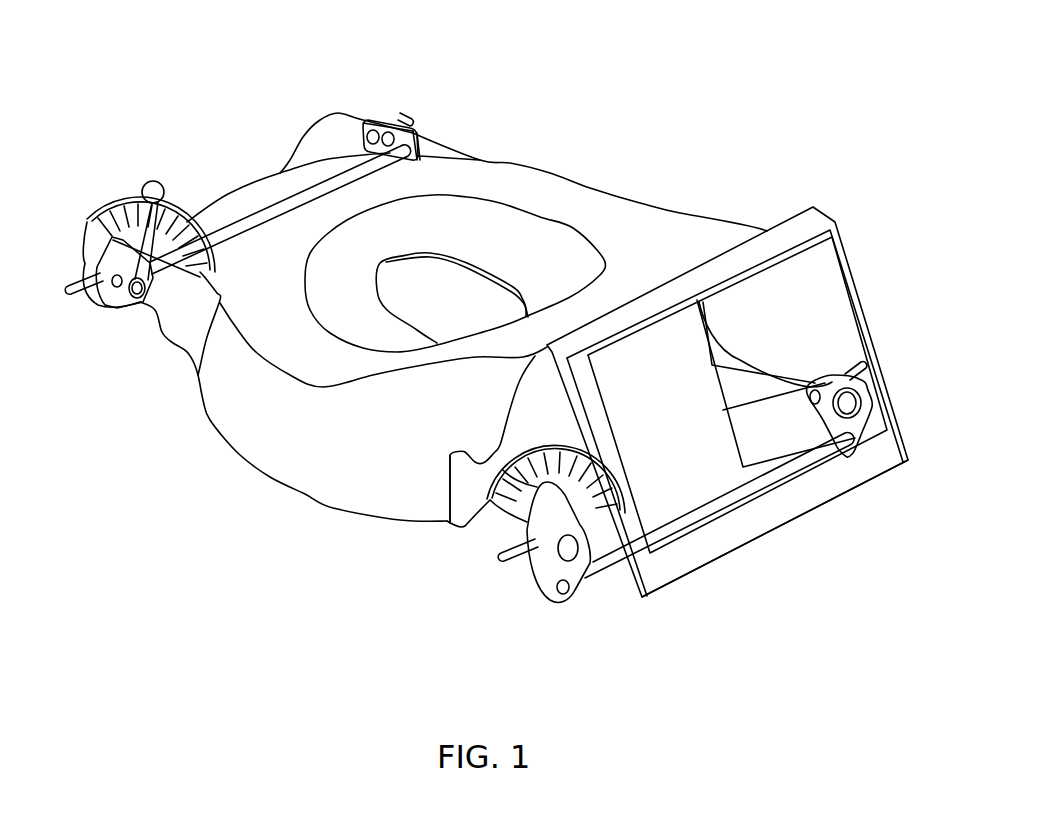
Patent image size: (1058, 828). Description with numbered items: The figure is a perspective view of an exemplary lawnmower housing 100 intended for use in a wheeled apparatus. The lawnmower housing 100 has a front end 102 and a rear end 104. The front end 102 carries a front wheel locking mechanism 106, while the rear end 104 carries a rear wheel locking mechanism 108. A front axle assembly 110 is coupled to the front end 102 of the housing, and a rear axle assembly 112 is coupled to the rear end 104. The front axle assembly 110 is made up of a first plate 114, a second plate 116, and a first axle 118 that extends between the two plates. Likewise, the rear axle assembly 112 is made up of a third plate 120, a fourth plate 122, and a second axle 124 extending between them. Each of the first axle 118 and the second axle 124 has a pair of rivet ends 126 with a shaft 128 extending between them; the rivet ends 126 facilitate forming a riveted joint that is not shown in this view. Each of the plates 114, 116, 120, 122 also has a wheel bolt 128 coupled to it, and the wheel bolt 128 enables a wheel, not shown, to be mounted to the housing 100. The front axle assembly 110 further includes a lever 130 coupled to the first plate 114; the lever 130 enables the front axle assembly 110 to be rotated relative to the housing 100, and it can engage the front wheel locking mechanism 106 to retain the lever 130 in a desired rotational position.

The lawnmower housing 100 is at (725, 52).
The front end 102 is at (333, 93).
The rear end 104 is at (850, 353).
The front wheel locking mechanism 106 is at (100, 210).
The rear wheel locking mechanism 108 is at (478, 516).
The front axle assembly 110 is at (412, 105).
The rear axle assembly 112 is at (827, 357).
The first plate 114 is at (118, 310).
The second plate 116 is at (383, 118).
The first axle 118 is at (290, 188).
The third plate 120 is at (553, 572).
The fourth plate 122 is at (828, 410).
The second axle 124 is at (612, 578).
The rivet ends 126 is at (133, 310).
The wheel bolt 128 is at (855, 370).
The lever 130 is at (150, 182).